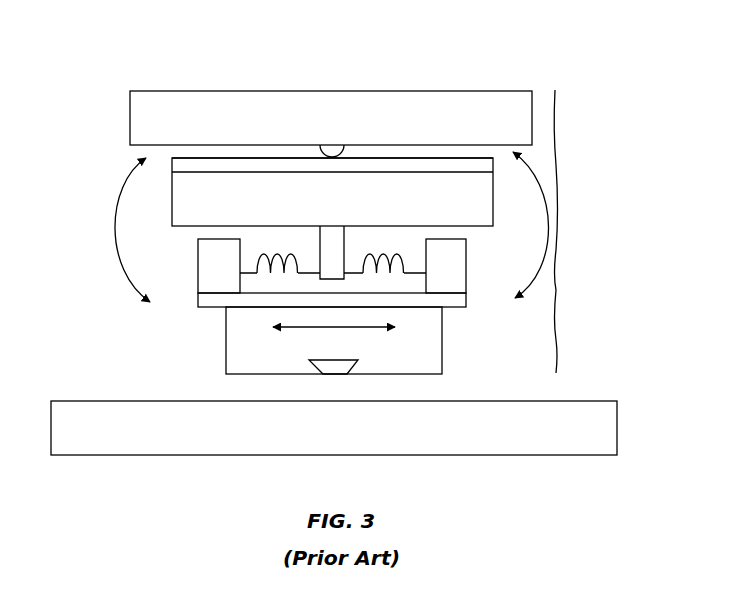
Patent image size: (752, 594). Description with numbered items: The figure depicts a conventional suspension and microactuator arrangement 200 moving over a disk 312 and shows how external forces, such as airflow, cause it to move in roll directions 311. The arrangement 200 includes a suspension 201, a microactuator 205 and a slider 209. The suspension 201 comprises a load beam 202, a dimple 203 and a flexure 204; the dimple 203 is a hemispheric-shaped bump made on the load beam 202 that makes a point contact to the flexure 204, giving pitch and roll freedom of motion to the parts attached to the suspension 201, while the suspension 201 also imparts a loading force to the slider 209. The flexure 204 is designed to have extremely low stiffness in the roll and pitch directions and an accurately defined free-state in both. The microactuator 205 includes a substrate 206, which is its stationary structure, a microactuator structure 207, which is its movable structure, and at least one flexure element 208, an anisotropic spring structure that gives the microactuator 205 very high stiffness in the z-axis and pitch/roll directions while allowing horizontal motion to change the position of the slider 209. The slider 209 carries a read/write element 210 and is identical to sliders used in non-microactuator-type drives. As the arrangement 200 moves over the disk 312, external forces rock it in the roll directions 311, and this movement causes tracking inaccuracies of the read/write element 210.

The suspension and microactuator arrangement 200 is at (145, 68).
The suspension 201 is at (557, 115).
The load beam 202 is at (140, 118).
The dimple 203 is at (332, 150).
The flexure 204 is at (170, 165).
The microactuator 205 is at (557, 222).
The substrate 206 is at (180, 200).
The microactuator structure 207 is at (208, 267).
The flexure element 208 is at (278, 270).
The slider 209 is at (557, 340).
The read/write element 210 is at (333, 368).
The roll directions 311 is at (113, 235).
The disk 312 is at (595, 427).